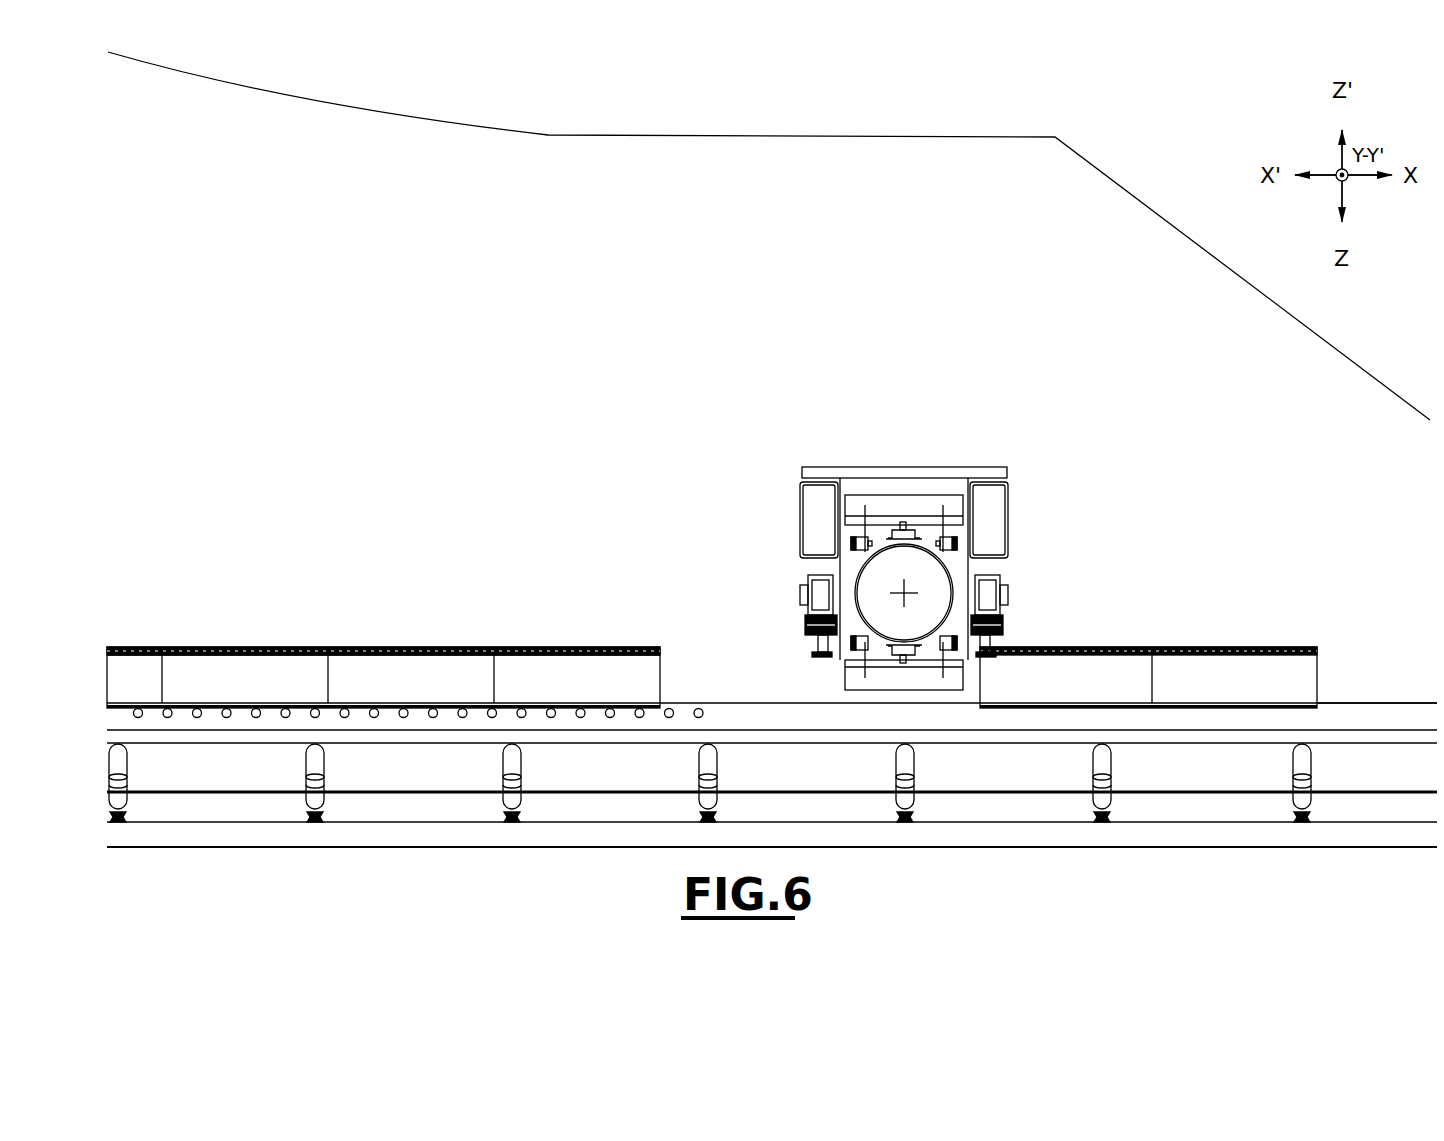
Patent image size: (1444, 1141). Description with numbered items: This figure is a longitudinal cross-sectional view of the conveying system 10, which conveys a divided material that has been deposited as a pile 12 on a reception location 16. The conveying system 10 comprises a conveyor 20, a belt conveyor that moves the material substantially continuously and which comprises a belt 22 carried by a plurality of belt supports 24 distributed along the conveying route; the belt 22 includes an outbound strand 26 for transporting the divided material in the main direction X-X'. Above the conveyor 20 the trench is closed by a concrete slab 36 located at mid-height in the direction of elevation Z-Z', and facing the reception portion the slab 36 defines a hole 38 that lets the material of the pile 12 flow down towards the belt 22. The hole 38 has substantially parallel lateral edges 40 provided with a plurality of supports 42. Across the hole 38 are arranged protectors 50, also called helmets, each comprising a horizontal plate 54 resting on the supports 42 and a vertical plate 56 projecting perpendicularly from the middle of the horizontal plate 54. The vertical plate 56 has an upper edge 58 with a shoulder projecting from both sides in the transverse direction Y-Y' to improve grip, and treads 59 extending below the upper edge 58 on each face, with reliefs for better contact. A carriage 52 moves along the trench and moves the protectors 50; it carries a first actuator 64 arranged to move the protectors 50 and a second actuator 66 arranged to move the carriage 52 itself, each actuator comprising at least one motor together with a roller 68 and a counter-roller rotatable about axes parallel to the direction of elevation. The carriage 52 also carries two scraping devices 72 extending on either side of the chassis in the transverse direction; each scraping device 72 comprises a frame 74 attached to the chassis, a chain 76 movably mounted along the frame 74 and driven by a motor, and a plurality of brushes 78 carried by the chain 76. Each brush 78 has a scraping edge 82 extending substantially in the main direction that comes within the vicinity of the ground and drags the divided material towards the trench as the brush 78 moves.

The conveying system 10 is at (1175, 148).
The pile 12 is at (312, 105).
The reception location 16 is at (772, 814).
The conveyor 20 is at (1020, 852).
The belt 22 is at (620, 815).
The belt supports 24 is at (1310, 808).
The outbound strand 26 is at (317, 856).
The slab 36 is at (1403, 718).
The hole 38 is at (1268, 716).
The lateral edges 40 is at (687, 700).
The supports 42 is at (433, 708).
The protectors 50 is at (1108, 682).
The carriage 52 is at (904, 460).
The horizontal plate 54 is at (268, 703).
The vertical plate 56 is at (190, 670).
The upper edge 58 is at (219, 642).
The treads 59 is at (312, 655).
The first actuator 64 is at (796, 584).
The second actuator 66 is at (1020, 616).
The roller 68 is at (1030, 652).
The scraping devices 72 is at (958, 482).
The frame 74 is at (948, 540).
The chain 76 is at (900, 528).
The brushes 78 is at (925, 680).
The scraping edge 82 is at (886, 696).